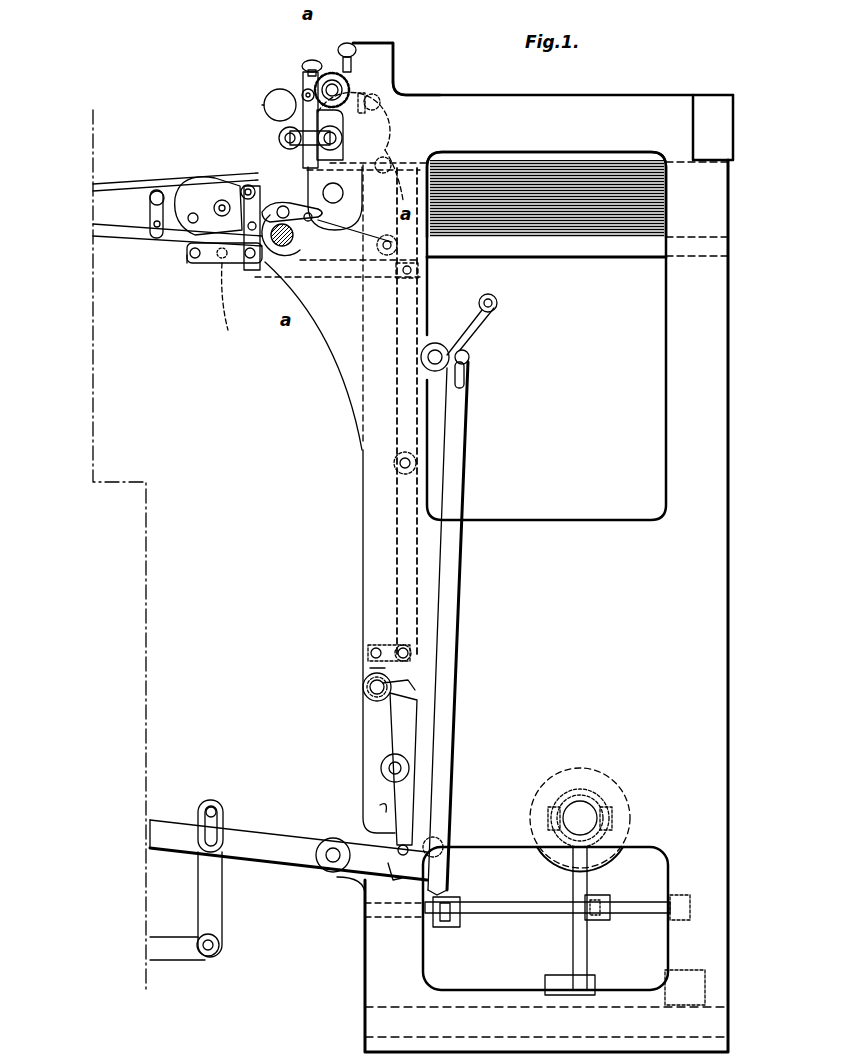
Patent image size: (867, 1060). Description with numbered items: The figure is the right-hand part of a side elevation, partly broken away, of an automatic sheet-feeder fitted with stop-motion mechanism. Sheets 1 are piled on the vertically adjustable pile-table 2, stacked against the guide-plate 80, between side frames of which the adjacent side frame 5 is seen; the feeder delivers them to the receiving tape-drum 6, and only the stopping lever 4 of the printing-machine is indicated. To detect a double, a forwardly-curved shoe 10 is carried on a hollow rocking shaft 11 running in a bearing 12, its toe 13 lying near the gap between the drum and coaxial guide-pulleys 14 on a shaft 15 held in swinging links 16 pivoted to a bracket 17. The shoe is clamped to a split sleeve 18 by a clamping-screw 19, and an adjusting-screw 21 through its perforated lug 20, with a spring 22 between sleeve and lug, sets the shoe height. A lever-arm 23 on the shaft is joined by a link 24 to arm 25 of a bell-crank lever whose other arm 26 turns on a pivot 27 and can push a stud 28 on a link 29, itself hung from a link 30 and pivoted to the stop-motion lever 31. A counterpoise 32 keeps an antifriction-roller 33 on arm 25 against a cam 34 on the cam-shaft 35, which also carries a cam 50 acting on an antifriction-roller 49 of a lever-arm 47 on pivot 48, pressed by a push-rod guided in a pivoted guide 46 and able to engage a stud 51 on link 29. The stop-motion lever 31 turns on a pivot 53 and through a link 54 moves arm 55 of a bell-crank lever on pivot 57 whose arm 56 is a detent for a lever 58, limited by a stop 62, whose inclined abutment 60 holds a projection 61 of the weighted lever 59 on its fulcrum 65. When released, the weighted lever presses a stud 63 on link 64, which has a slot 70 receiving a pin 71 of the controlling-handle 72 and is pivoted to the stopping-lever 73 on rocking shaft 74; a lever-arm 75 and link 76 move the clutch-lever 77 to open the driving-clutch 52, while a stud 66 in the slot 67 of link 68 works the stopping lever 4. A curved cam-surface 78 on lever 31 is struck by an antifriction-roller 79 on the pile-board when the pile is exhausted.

The sheets 1 is at (550, 160).
The pile-table 2 is at (613, 260).
The stopping lever 4 is at (168, 935).
The side frame 5 is at (534, 571).
The receiving tape-drum 6 is at (355, 220).
The shoe 10 is at (385, 150).
The rocking shaft 11 is at (372, 90).
The bearing 12 is at (332, 72).
The toe 13 is at (392, 145).
The guide-pulley 14 is at (375, 183).
The shaft 15 is at (340, 136).
The swinging link 16 is at (300, 160).
The bracket 17 is at (280, 135).
The split sleeve 18 is at (308, 60).
The clamping-screw 19 is at (392, 92).
The perforated lug 20 is at (395, 72).
The adjusting-screw 21 is at (352, 52).
The spring 22 is at (395, 60).
The lever-arm 23 is at (302, 90).
The link 24 is at (270, 98).
The bell-crank lever arm 25 is at (322, 216).
The lever-arm 26 is at (210, 265).
The pivot 27 is at (200, 182).
The stud 28 is at (234, 312).
The link 29 is at (210, 262).
The link 30 is at (195, 265).
The stop-motion lever 31 is at (368, 418).
The counterpoise 32 is at (263, 105).
The antifriction-roller 33 is at (305, 160).
The cam 34 is at (352, 231).
The cam-shaft 35 is at (295, 250).
The pivoted guide 46 is at (156, 240).
The lever-arm 47 is at (252, 270).
The pivot 48 is at (245, 185).
The antifriction-roller 49 is at (214, 208).
The cam 50 is at (288, 247).
The stud 51 is at (285, 260).
The driving-clutch 52 is at (603, 805).
The pivot 53 is at (398, 470).
The link 54 is at (370, 645).
The bell-crank lever arm 55 is at (370, 668).
The lever-arm 56 is at (395, 700).
The pivot 57 is at (363, 690).
The lever 58 is at (380, 742).
The weighted lever 59 is at (292, 838).
The inclined abutment 60 is at (398, 846).
The stud or projection 61 is at (390, 875).
The stop 62 is at (380, 808).
The stud 63 is at (442, 852).
The link 64 is at (452, 790).
The fulcrum 65 is at (328, 868).
The stud 66 is at (204, 812).
The slot 67 is at (222, 808).
The link 68 is at (222, 900).
The slot 70 is at (466, 378).
The pin 71 is at (470, 358).
The controlling-handle 72 is at (478, 305).
The stopping-lever 73 is at (448, 925).
The rocking shaft 74 is at (510, 913).
The lever-arm 75 is at (602, 920).
The link 76 is at (598, 896).
The clutch-lever 77 is at (580, 883).
The cam-surface 78 is at (390, 162).
The antifriction-roller 79 is at (384, 411).
The guide-plate 80 is at (397, 340).